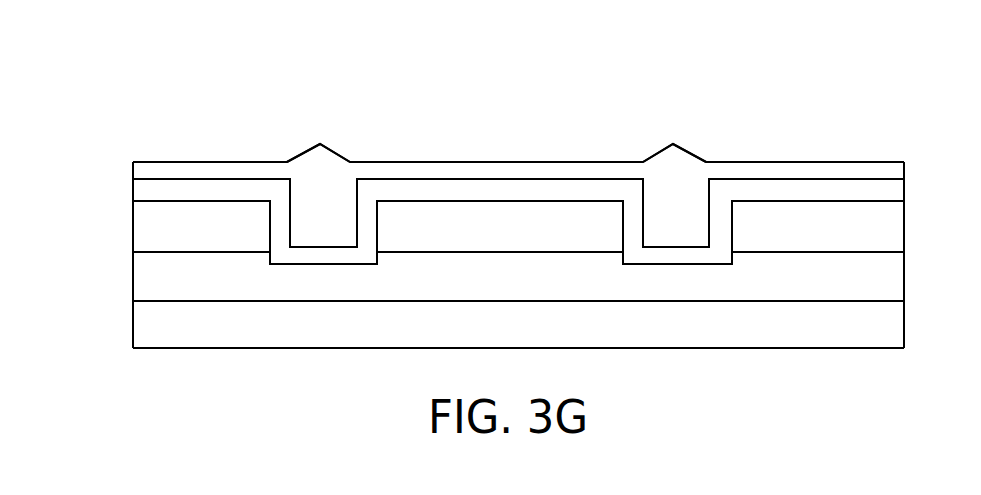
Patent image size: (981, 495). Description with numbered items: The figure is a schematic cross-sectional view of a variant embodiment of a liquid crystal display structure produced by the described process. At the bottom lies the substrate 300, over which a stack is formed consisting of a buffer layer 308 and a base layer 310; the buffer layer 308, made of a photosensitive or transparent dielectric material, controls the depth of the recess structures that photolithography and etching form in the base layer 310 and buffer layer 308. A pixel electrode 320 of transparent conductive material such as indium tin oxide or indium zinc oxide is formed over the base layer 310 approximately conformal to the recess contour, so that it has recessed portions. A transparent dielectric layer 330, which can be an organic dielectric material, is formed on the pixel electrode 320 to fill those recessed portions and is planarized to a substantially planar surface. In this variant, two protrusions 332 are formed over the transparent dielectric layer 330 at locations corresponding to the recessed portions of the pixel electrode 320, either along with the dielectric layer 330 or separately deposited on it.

The substrate 300 is at (143, 328).
The buffer layer 308 is at (143, 280).
The base layer 310 is at (148, 231).
The pixel electrode 320 is at (143, 189).
The transparent dielectric layer 330 is at (143, 167).
The protrusion 332 is at (303, 110).